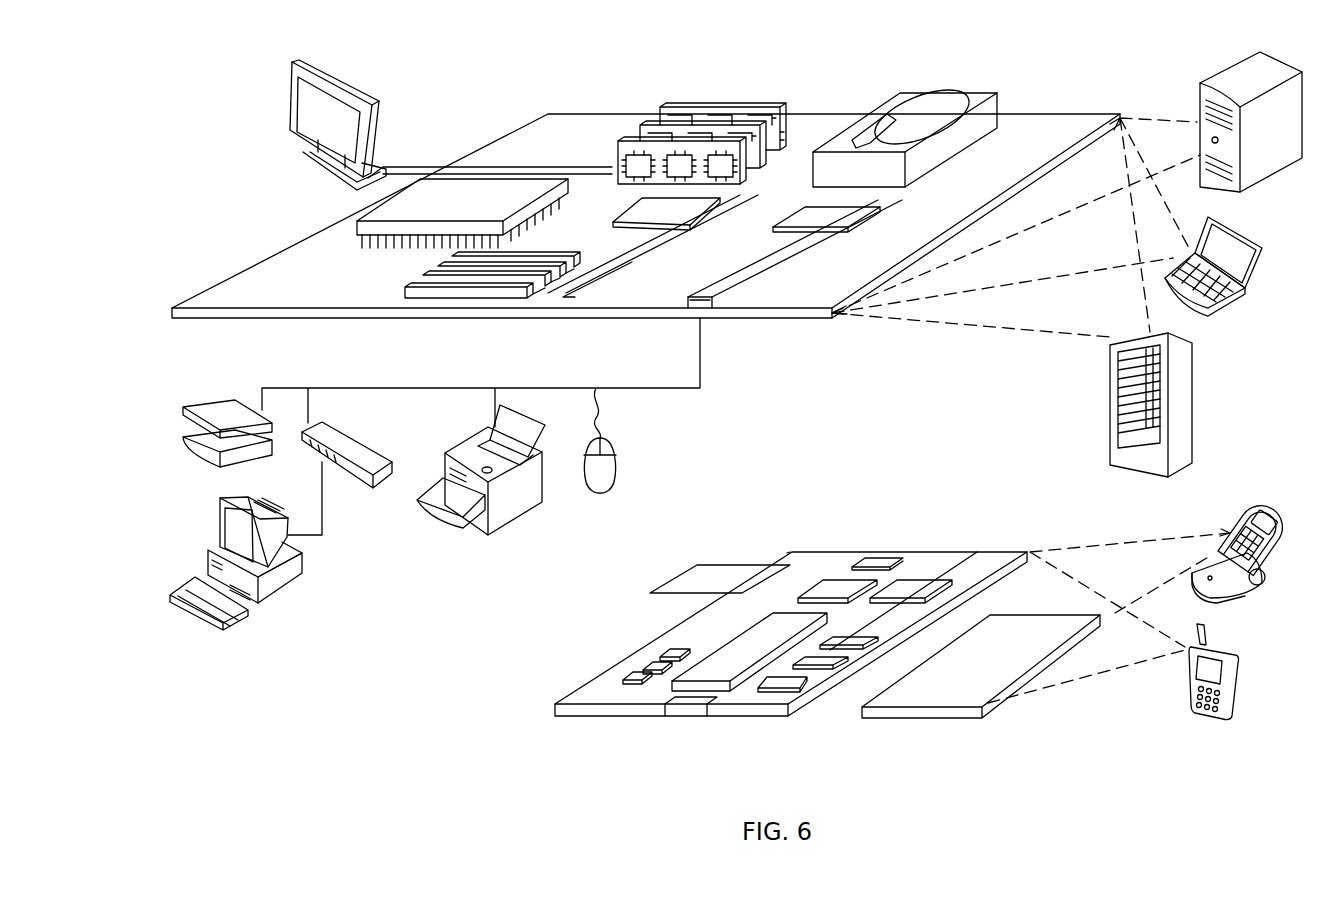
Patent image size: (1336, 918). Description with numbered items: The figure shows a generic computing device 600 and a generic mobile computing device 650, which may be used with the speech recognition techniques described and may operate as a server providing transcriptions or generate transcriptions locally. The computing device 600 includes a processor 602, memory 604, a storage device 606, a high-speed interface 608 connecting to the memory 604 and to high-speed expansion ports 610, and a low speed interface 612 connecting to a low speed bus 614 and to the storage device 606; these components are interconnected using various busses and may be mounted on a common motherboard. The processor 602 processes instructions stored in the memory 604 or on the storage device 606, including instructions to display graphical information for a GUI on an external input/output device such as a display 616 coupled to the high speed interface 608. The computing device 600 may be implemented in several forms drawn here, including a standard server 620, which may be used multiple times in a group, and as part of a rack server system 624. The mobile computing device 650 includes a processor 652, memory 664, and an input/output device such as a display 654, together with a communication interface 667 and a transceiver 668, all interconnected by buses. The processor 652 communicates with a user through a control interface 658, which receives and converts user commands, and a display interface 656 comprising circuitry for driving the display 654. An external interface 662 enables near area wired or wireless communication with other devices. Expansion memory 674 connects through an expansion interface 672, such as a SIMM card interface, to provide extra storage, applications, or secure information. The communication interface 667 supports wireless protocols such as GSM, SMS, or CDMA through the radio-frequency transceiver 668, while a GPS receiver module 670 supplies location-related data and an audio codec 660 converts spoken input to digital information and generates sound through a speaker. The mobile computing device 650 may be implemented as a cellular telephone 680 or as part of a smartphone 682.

The computing device 600 is at (478, 88).
The processor 602 is at (365, 230).
The memory 604 is at (668, 118).
The storage device 606 is at (900, 100).
The high-speed interface 608 is at (596, 192).
The high-speed expansion ports 610 is at (418, 280).
The low speed interface 612 is at (806, 213).
The low speed bus 614 is at (705, 312).
The display 616 is at (291, 62).
The standard server 620 is at (1200, 100).
The rack server system 624 is at (1110, 430).
The mobile computing device 650 is at (530, 714).
The processor 652 is at (722, 672).
The display 654 is at (948, 690).
The display interface 656 is at (790, 682).
The control interface 658 is at (823, 662).
The audio codec 660 is at (850, 642).
The external interface 662 is at (690, 708).
The memory 664 is at (640, 660).
The communication interface 667 is at (838, 588).
The transceiver 668 is at (912, 588).
The GPS receiver module 670 is at (885, 562).
The expansion interface 672 is at (770, 560).
The expansion memory 674 is at (703, 563).
The cellular telephone 680 is at (1243, 512).
The smartphone 682 is at (1188, 680).